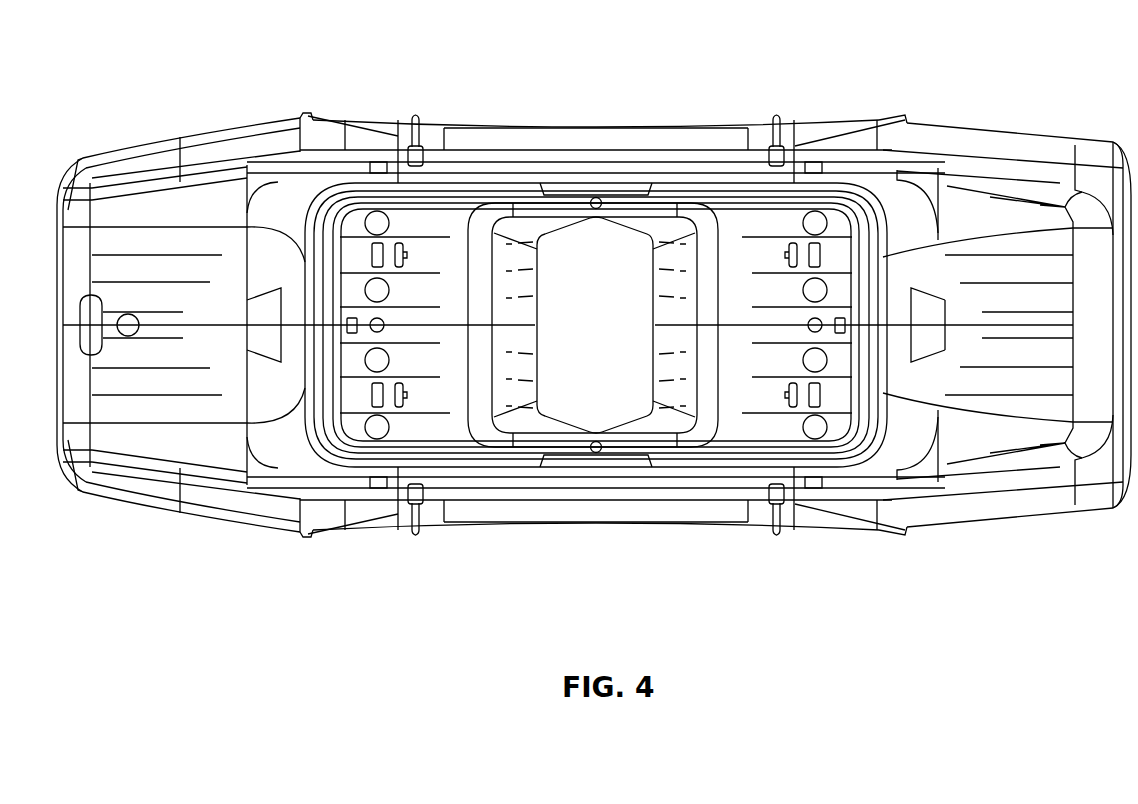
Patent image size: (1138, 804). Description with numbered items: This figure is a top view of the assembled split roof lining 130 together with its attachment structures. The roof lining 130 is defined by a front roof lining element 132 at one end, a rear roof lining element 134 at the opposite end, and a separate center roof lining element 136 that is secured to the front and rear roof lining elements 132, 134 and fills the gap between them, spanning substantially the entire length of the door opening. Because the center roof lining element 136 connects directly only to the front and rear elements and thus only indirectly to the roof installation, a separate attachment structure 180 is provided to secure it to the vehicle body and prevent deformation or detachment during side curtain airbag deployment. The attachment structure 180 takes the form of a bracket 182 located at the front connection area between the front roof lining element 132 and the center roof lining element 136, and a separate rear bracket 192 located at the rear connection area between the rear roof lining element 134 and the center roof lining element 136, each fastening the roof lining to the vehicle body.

The roof lining 130 is at (582, 97).
The front roof lining element 132 is at (1018, 505).
The rear roof lining element 134 is at (165, 497).
The center roof lining element 136 is at (600, 514).
The attachment structure 180 is at (808, 95).
The bracket 182 is at (771, 118).
The rear bracket 192 is at (411, 118).